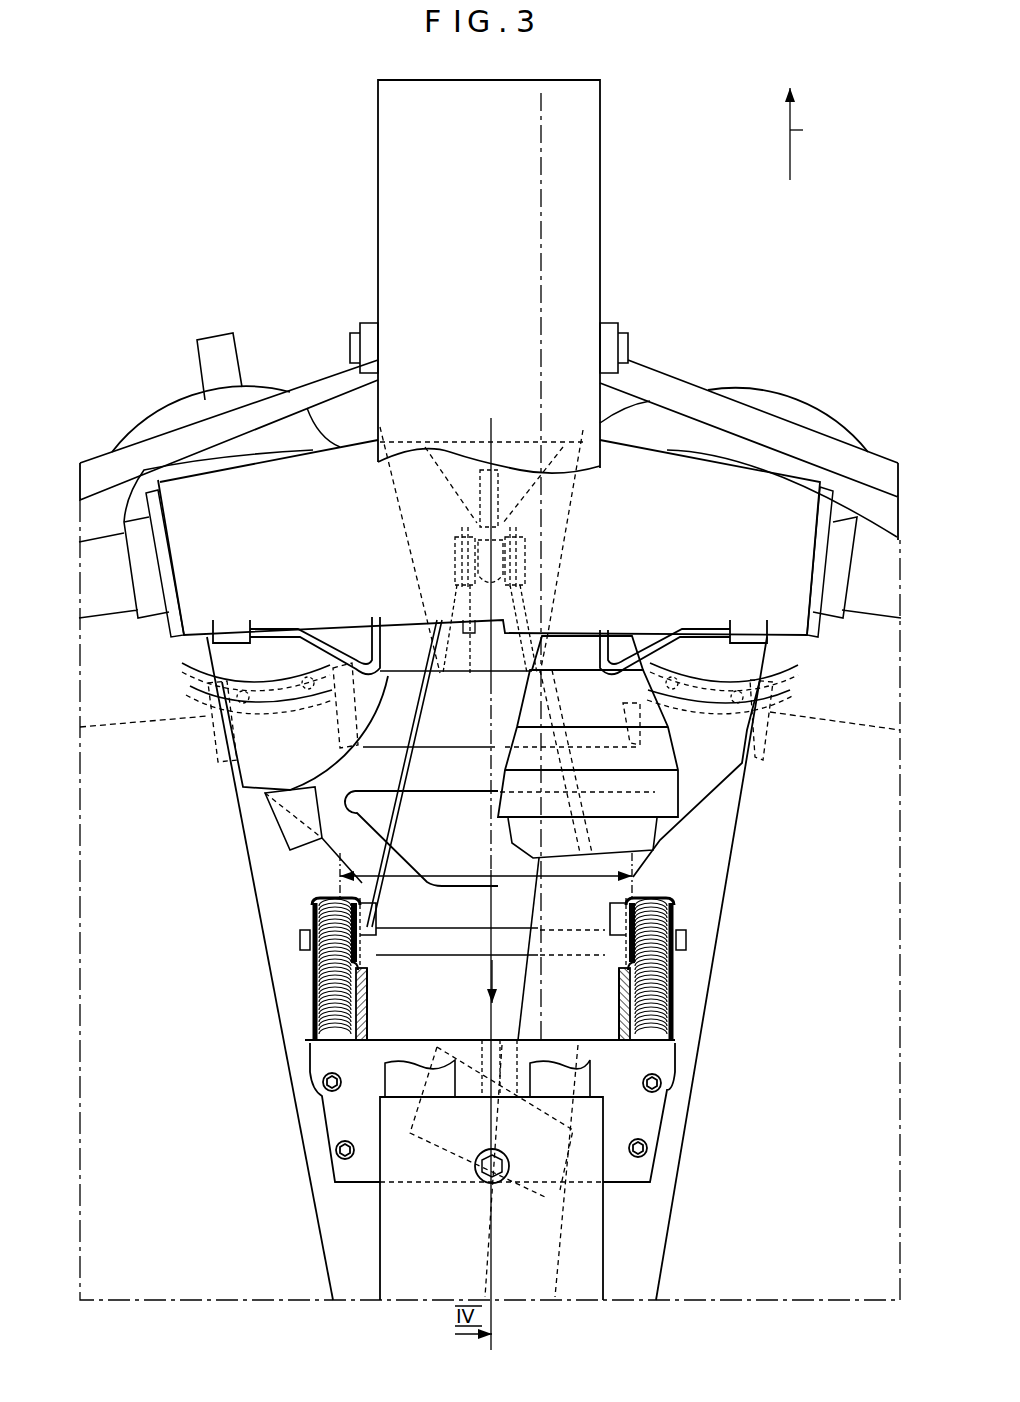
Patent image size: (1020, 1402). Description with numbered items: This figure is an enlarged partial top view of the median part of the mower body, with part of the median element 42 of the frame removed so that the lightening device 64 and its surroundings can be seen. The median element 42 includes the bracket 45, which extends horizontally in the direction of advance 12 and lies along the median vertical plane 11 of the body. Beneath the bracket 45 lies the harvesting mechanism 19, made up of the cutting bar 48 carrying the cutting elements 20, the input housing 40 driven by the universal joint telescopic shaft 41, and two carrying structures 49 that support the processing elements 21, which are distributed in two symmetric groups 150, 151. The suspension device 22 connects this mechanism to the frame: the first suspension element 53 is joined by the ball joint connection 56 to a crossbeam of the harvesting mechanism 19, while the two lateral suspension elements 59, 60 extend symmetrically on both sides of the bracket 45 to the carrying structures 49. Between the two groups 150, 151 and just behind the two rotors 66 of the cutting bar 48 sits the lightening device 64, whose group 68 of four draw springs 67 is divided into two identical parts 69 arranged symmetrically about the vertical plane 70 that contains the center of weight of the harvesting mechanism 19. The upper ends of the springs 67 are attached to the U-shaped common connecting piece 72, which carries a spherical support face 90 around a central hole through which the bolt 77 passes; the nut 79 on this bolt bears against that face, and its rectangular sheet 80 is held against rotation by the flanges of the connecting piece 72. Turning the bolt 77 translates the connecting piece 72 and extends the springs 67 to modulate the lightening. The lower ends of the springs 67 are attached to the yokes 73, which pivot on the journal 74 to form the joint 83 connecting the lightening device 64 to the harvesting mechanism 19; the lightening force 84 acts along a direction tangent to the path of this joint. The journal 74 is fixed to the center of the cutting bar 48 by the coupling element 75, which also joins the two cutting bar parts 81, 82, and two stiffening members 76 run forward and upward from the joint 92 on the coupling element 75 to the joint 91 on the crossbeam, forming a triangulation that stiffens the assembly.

The median vertical plane 11 is at (493, 1252).
The direction of advance 12 is at (816, 134).
The harvesting mechanism 19 is at (230, 310).
The cutting elements 20 is at (203, 393).
The processing elements 21 is at (152, 872).
The suspension device 22 is at (674, 334).
The input housing 40 is at (353, 447).
The universal joint telescopic shaft 41 is at (538, 900).
The median element 42 is at (608, 1240).
The bracket 45 is at (577, 222).
The cutting bar 48 is at (140, 413).
The carrying structures 49 is at (103, 600).
The first suspension element 53 is at (497, 488).
The ball joint connection 56 is at (508, 540).
The lateral suspension element 59 is at (300, 388).
The lateral suspension element 60 is at (741, 407).
The lightening device 64 is at (267, 968).
The rotors 66 is at (222, 648).
The draw springs 67 is at (373, 1000).
The group of draw springs 68 is at (683, 1043).
The part of the group of springs 69 is at (300, 920).
The vertical plane 70 is at (541, 123).
The common connecting piece 72 is at (327, 1107).
The yokes 73 is at (313, 897).
The journal 74 is at (451, 947).
The coupling element 75 is at (457, 788).
The stiffening members 76 is at (500, 713).
The bolt 77 is at (489, 1177).
The nut 79 is at (491, 1122).
The rectangular sheet 80 is at (487, 1107).
The cutting bar part 81 is at (150, 718).
The cutting bar part 82 is at (835, 718).
The joint 83 is at (299, 954).
The lightening force 84 is at (510, 981).
The spherical support face 90 is at (469, 1103).
The joint 91 is at (452, 555).
The joint 92 is at (375, 928).
The group of processing elements 150 is at (162, 1104).
The group of processing elements 151 is at (863, 1104).